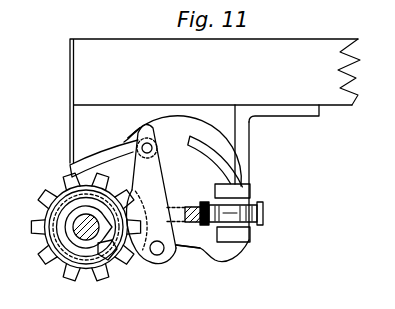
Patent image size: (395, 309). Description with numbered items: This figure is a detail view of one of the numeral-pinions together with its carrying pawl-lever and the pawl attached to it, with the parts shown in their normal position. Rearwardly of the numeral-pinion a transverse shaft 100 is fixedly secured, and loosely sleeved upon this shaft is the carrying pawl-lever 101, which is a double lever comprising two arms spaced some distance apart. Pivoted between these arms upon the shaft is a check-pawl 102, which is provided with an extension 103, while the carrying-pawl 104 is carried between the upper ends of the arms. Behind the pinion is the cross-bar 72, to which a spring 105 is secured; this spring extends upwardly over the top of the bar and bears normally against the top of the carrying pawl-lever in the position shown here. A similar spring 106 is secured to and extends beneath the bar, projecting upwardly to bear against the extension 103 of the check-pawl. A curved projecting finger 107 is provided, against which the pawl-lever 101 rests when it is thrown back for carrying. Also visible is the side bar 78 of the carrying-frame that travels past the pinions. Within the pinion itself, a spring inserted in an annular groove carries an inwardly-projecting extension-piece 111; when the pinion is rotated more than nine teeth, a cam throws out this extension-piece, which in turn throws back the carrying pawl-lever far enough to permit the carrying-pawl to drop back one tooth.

The cross-bar 72 is at (244, 191).
The side bar 78 is at (185, 221).
The transverse shaft 100 is at (158, 255).
The carrying pawl-lever 101 is at (152, 186).
The check-pawl 102 is at (150, 203).
The extension 103 is at (192, 249).
The carrying-pawl 104 is at (87, 158).
The spring 105 is at (193, 119).
The spring 106 is at (245, 261).
The curved projecting finger 107 is at (233, 162).
The extension-piece 111 is at (96, 263).